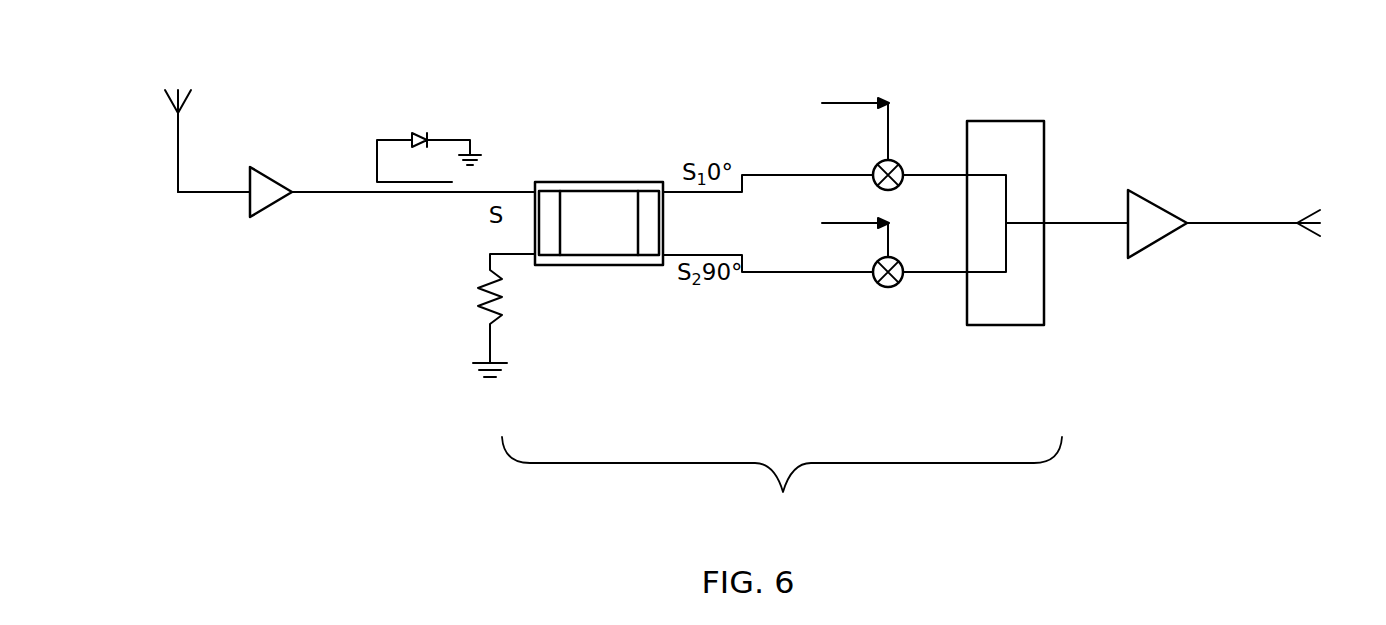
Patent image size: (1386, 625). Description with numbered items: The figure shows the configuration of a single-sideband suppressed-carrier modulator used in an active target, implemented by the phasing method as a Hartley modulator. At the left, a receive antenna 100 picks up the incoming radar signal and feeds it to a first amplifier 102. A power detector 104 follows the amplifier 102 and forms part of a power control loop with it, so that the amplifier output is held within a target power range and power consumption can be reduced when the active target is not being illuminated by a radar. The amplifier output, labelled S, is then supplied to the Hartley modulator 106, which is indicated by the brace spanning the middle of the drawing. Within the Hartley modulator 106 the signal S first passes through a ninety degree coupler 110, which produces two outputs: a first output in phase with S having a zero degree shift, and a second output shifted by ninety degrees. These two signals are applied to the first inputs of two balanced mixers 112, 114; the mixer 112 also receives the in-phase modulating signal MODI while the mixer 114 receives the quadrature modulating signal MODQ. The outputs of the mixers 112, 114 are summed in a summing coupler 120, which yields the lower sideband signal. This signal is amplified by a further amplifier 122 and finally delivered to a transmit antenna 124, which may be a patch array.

The receive antenna 100 is at (175, 143).
The first amplifier 102 is at (268, 207).
The power detector 104 is at (471, 100).
The Hartley modulator 106 is at (782, 484).
The 90° coupler 110 is at (581, 181).
The balanced mixer 112 is at (920, 146).
The balanced mixer 114 is at (887, 288).
The summing coupler 120 is at (1006, 120).
The further amplifier 122 is at (1157, 242).
The transmit antenna 124 is at (1310, 234).